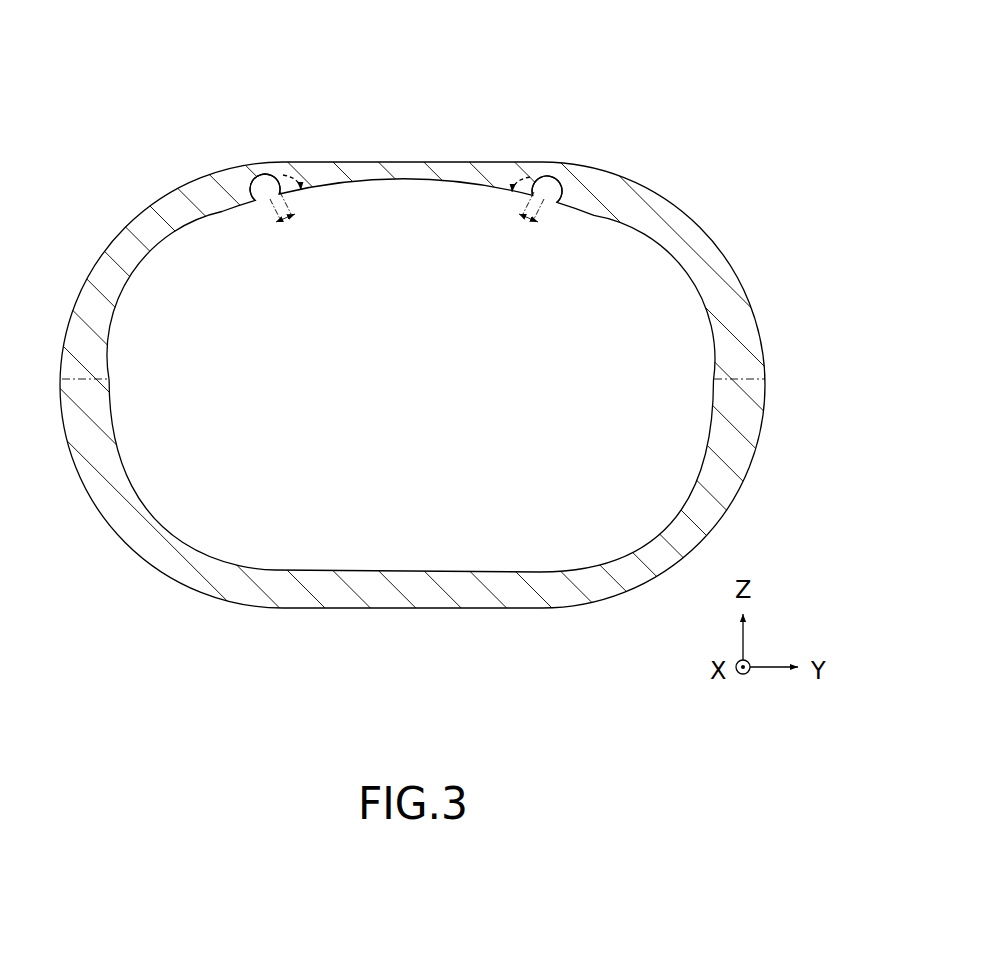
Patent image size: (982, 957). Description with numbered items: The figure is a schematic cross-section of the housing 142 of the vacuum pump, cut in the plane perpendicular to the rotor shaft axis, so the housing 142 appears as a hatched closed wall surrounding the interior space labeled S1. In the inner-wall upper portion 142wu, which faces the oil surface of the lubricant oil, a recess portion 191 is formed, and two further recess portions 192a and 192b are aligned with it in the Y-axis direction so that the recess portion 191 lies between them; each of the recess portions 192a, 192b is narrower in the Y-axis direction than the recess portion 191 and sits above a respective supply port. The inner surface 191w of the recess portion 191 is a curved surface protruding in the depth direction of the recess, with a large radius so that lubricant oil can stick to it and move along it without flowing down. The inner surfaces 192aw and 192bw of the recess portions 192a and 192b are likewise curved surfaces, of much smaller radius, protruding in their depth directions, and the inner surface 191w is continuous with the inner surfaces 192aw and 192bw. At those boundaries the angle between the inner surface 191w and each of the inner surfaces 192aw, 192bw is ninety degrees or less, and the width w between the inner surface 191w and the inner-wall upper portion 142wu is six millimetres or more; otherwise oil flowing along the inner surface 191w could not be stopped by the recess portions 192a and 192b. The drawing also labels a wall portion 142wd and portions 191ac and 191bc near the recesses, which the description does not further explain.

The housing 142 is at (131, 527).
The inner-wall upper portion 142wu is at (627, 232).
The lower/side wall portion 142wd is at (696, 456).
The recess portion 191 is at (393, 196).
The inner surface 191w is at (402, 188).
The inner surface portion adjacent groove 192a 191ac is at (298, 201).
The inner surface portion adjacent groove 192b 191bc is at (519, 200).
The recess portion 192a is at (265, 172).
The recess portion 192b is at (547, 174).
The inner surface 192aw is at (263, 204).
The inner surface 192bw is at (565, 210).
The width w is at (407, 232).
The internal space S1 is at (422, 420).